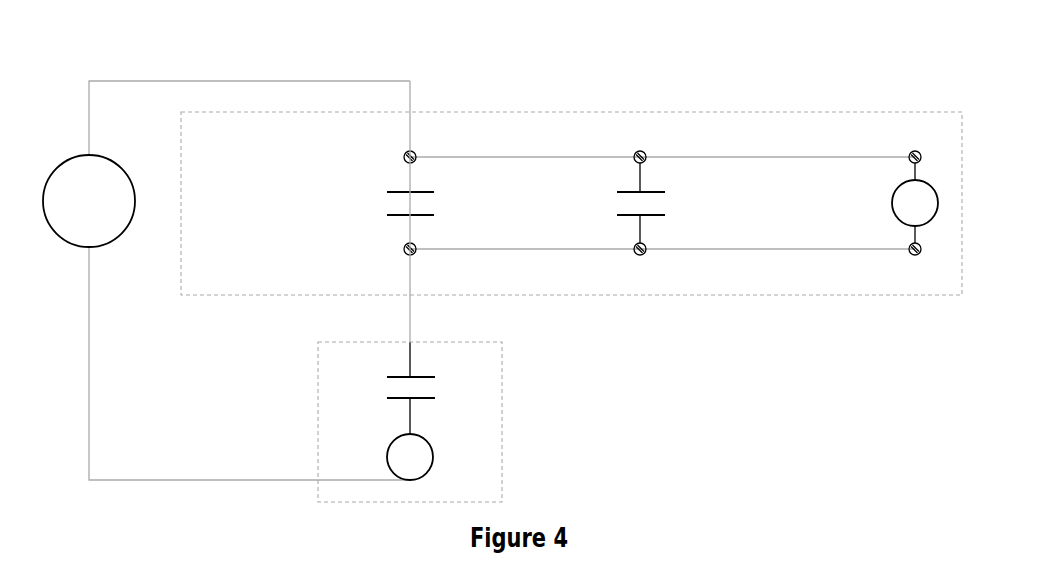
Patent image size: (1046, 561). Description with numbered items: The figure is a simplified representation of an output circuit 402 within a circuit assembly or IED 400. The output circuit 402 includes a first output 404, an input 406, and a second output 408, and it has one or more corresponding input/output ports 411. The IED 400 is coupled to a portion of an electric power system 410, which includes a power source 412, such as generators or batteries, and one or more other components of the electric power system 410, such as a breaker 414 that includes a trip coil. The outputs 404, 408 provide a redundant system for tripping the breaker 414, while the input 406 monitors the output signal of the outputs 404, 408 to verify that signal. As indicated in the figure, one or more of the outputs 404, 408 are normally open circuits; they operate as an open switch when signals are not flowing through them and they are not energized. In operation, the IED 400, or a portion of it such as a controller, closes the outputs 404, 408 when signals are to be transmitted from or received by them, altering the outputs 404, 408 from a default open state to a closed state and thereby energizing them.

The circuit assembly or IED 400 is at (820, 80).
The output circuit 402 is at (796, 295).
The first output 404 is at (365, 203).
The input 406 is at (875, 203).
The second output 408 is at (599, 203).
The electric power system 410 is at (250, 62).
The input/output ports 411 is at (412, 96).
The power source 412 is at (110, 237).
The breaker 414 is at (503, 371).